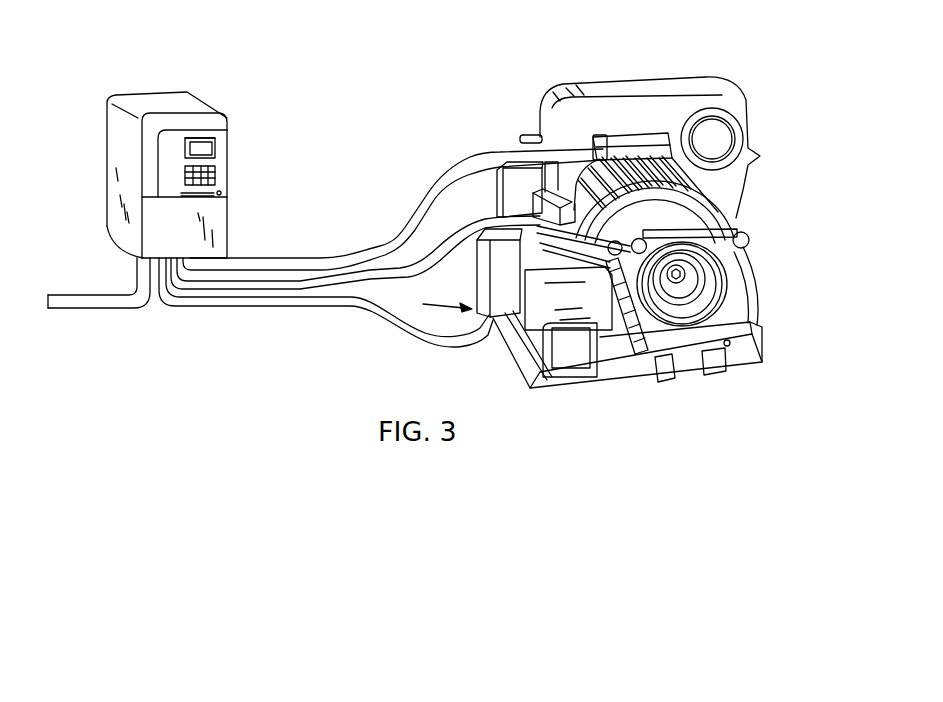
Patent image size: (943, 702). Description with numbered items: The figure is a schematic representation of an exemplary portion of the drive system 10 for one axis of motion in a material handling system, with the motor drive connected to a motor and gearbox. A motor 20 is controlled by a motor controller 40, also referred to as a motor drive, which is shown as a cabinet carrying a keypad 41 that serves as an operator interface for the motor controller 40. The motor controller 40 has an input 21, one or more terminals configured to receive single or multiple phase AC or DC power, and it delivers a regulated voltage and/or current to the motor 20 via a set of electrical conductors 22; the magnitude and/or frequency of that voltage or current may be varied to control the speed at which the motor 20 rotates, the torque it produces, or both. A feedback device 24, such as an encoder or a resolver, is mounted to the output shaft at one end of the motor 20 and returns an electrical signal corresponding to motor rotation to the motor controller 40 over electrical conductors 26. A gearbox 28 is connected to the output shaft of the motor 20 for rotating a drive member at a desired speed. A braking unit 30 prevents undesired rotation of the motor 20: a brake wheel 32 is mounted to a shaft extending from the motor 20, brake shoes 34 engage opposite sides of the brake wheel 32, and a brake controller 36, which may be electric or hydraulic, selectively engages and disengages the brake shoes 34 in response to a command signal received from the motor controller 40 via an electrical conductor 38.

The drive system 10 is at (370, 79).
The motor 20 is at (742, 188).
The input 21 is at (88, 311).
The electrical conductors 22 is at (400, 272).
The feedback device 24 is at (640, 121).
The electrical conductors 26 is at (297, 257).
The gearbox 28 is at (742, 110).
The braking unit 30 is at (760, 248).
The brake wheel 32 is at (685, 306).
The brake shoes 34 is at (737, 277).
The brake controller 36 is at (432, 304).
The electrical conductor 38 is at (269, 305).
The motor controller 40 is at (130, 150).
The keypad 41 is at (223, 148).